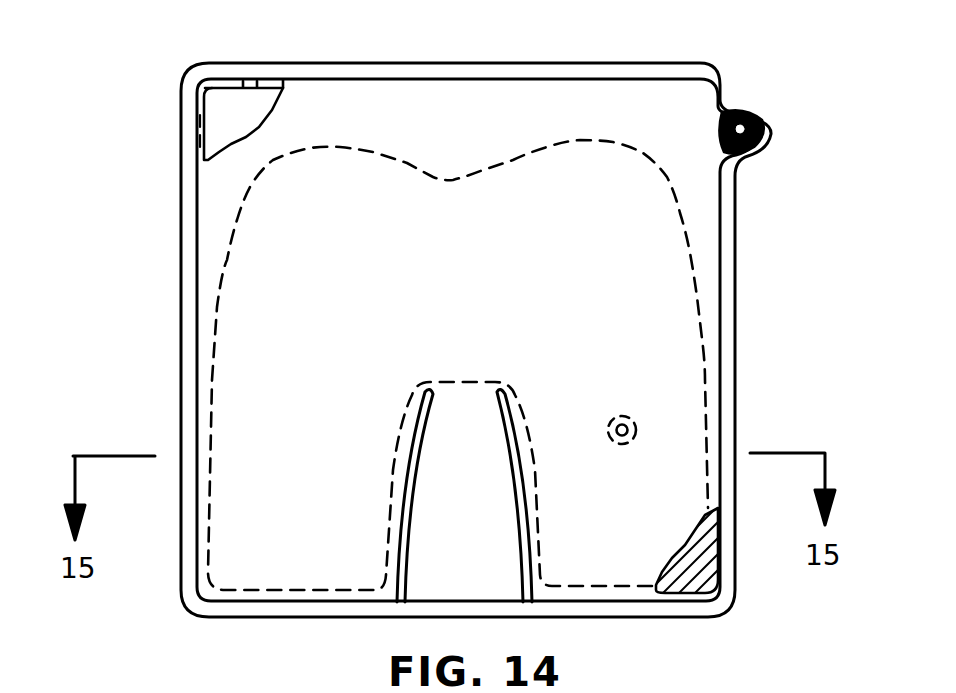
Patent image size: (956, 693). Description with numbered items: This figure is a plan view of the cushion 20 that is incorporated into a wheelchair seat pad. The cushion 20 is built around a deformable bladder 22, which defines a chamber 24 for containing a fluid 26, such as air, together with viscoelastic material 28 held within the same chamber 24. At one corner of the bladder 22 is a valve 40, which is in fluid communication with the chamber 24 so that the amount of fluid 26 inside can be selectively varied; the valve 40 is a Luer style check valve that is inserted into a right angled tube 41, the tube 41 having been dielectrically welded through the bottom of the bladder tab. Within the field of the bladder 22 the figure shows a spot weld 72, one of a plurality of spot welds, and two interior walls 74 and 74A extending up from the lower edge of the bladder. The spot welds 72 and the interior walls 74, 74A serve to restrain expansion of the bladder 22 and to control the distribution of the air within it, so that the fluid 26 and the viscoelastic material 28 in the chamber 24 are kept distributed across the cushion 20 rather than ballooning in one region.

The cushion 20 is at (128, 150).
The deformable bladder 22 is at (736, 282).
The chamber 24 is at (225, 113).
The fluid 26 is at (253, 105).
The viscoelastic material 28 is at (712, 590).
The valve 40 is at (737, 118).
The right angled tube 41 is at (756, 128).
The spot welds 72 is at (623, 418).
The interior wall 74 is at (405, 478).
The interior wall 74A is at (535, 500).